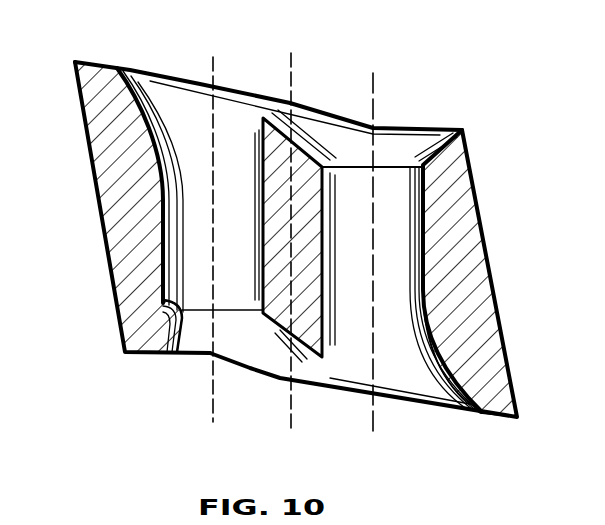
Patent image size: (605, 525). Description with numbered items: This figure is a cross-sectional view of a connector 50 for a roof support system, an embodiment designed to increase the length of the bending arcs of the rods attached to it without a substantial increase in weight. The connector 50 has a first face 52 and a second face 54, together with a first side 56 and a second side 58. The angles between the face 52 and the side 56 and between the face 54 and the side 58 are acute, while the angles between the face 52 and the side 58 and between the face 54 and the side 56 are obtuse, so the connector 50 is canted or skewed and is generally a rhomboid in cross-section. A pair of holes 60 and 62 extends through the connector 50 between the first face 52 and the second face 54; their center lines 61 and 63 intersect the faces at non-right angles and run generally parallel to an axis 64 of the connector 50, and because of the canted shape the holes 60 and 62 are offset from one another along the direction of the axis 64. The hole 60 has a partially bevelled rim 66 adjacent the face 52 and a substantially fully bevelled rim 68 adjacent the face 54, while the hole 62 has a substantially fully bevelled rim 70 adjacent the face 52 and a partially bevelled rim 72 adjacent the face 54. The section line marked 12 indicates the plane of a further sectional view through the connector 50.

The connector 50 is at (512, 110).
The first face 52 is at (102, 67).
The second face 54 is at (485, 410).
The first side 56 is at (102, 219).
The second side 58 is at (487, 248).
The hole 60 is at (262, 229).
The center line 61 is at (215, 140).
The hole 62 is at (405, 247).
The center line 63 is at (373, 283).
The axis 64 is at (290, 67).
The partially bevelled rim 66 is at (133, 97).
The fully bevelled rim 68 is at (143, 340).
The fully bevelled rim 70 is at (443, 128).
The partially bevelled rim 72 is at (448, 380).
The section line 12- 12 is at (410, 88).